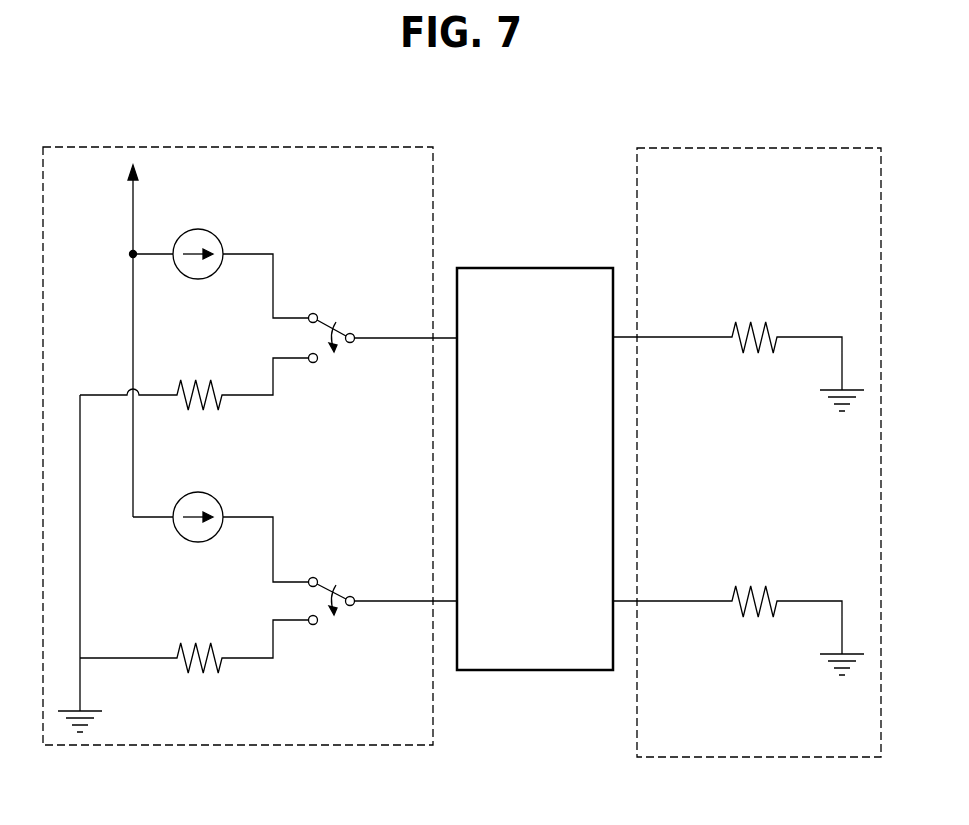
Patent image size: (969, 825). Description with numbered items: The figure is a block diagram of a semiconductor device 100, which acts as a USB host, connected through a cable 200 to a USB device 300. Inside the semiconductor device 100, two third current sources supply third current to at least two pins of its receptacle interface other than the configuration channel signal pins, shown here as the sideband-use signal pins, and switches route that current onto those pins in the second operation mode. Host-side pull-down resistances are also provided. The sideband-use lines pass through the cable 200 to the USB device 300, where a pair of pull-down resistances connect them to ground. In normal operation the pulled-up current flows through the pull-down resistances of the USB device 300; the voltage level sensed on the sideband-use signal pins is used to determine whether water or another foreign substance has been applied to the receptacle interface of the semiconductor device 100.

The semiconductor device 100 is at (222, 147).
The cable 200 is at (535, 268).
The USB device 300 is at (759, 148).